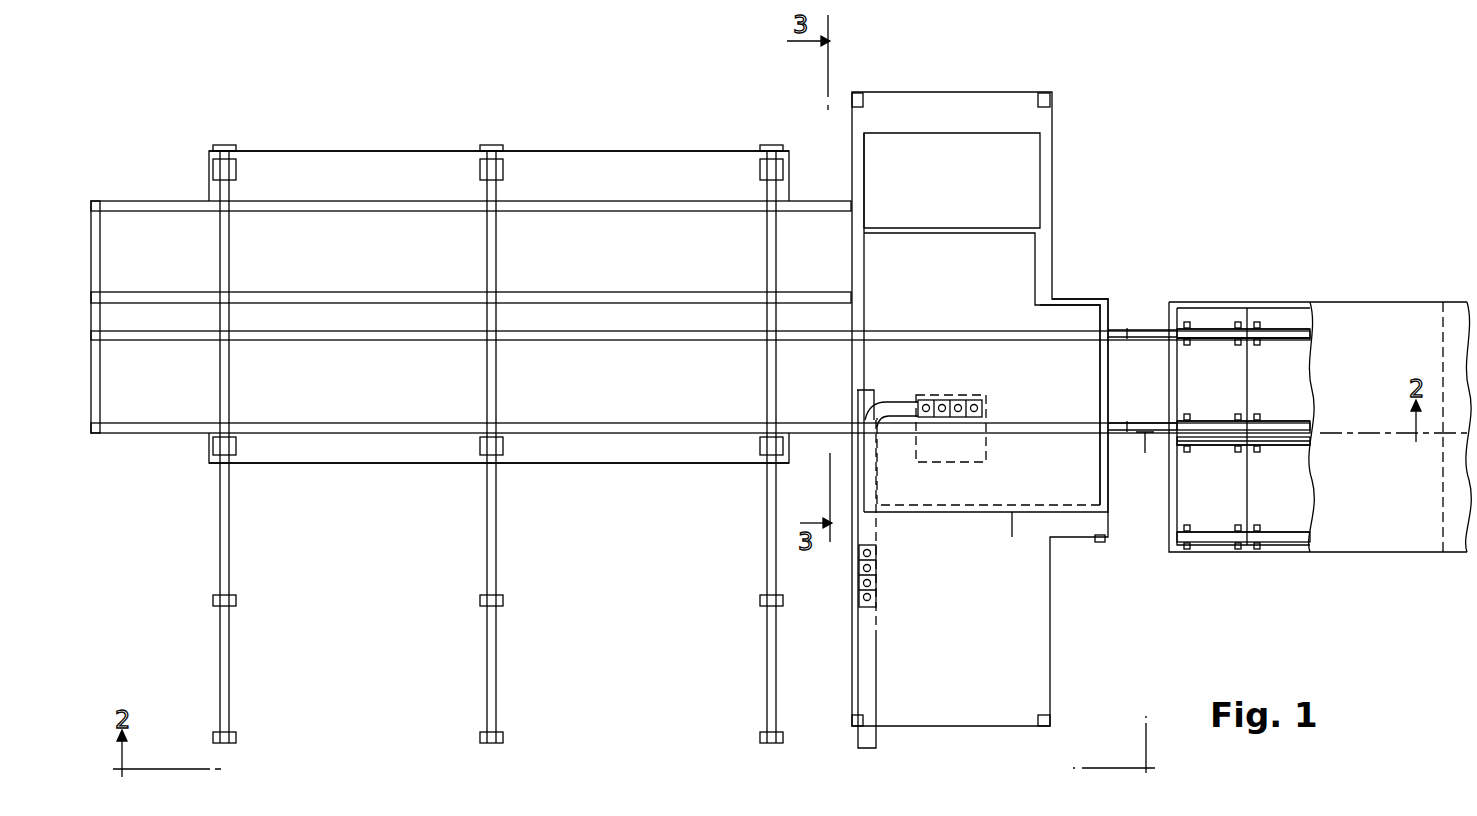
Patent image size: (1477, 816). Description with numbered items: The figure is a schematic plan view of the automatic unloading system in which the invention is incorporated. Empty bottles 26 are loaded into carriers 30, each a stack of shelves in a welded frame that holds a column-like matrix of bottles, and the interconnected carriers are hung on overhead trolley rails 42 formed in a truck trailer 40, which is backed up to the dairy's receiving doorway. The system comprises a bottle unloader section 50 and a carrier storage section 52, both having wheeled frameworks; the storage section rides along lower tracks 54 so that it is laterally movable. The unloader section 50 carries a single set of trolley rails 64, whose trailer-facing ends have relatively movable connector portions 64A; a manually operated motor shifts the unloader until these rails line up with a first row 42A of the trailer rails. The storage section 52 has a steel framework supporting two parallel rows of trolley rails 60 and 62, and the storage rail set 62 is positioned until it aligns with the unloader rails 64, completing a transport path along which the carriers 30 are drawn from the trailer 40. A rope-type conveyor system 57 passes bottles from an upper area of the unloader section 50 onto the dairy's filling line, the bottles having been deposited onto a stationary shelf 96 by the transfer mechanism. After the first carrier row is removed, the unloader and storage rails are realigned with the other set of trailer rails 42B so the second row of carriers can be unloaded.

The bottles 26 is at (927, 404).
The carrier 30 is at (1267, 317).
The truck trailer 40 is at (1353, 304).
The trolley rails 42 is at (1275, 321).
The first row of trailer rails 42A is at (1280, 422).
The other set of trailer rails 42B is at (1280, 530).
The bottle unloader section 50 is at (1061, 236).
The carrier storage section 52 is at (653, 133).
The lower tracks 54 is at (229, 553).
The rope-type conveyor system 57 is at (884, 597).
The trolley rails 60 is at (337, 201).
The storage rail set 62 is at (405, 341).
The unloader trolley rails 64 is at (1078, 330).
The movable connector portions 64A is at (1145, 329).
The stationary shelf 96 is at (988, 405).